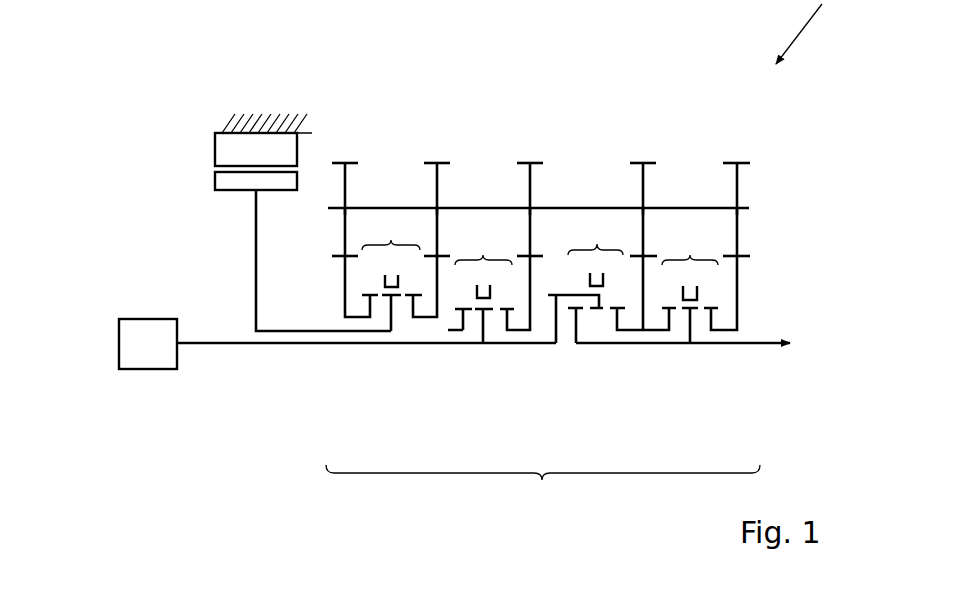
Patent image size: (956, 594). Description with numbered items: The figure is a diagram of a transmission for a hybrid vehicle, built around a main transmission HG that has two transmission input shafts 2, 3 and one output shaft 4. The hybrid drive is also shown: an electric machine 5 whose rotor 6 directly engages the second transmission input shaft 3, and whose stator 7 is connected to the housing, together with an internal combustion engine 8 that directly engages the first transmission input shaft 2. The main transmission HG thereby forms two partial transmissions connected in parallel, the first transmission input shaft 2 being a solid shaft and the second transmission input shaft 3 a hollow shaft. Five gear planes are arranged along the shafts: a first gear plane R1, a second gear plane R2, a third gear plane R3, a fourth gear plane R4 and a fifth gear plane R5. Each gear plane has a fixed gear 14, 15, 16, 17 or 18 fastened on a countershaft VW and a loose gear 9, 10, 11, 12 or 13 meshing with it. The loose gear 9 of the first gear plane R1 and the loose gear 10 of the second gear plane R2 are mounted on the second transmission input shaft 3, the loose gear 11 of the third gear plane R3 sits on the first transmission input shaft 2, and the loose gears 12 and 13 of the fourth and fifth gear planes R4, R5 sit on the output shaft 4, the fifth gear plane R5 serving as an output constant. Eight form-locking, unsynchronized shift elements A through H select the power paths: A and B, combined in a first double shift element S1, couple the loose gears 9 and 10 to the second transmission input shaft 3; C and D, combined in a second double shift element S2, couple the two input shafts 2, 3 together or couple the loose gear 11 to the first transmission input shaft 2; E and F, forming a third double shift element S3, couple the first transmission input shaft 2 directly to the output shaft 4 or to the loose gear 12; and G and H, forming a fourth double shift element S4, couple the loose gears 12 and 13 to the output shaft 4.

The first transmission input shaft 2 is at (227, 345).
The second transmission input shaft 3 is at (280, 332).
The output shaft 4 is at (768, 347).
The electric machine 5 is at (169, 156).
The rotor 6 is at (232, 183).
The stator 7 is at (232, 152).
The internal combustion engine 8 is at (138, 355).
The loose gear 9 is at (345, 298).
The loose gear 10 is at (438, 298).
The loose gear 11 is at (530, 298).
The loose gear 12 is at (643, 298).
The loose gear 13 is at (737, 298).
The fixed gear 14 is at (343, 190).
The fixed gear 15 is at (437, 190).
The fixed gear 16 is at (530, 190).
The fixed gear 17 is at (643, 190).
The fixed gear 18 is at (737, 190).
The first gear plane R1 is at (345, 146).
The second gear plane R2 is at (437, 146).
The third gear plane R3 is at (530, 146).
The fourth gear plane R4 is at (643, 146).
The fifth gear plane R5 is at (737, 146).
The first double shift element S1 is at (391, 241).
The second double shift element S2 is at (483, 256).
The third double shift element S3 is at (597, 244).
The fourth double shift element S4 is at (690, 256).
The countershaft VW is at (558, 207).
The main transmission HG is at (543, 489).